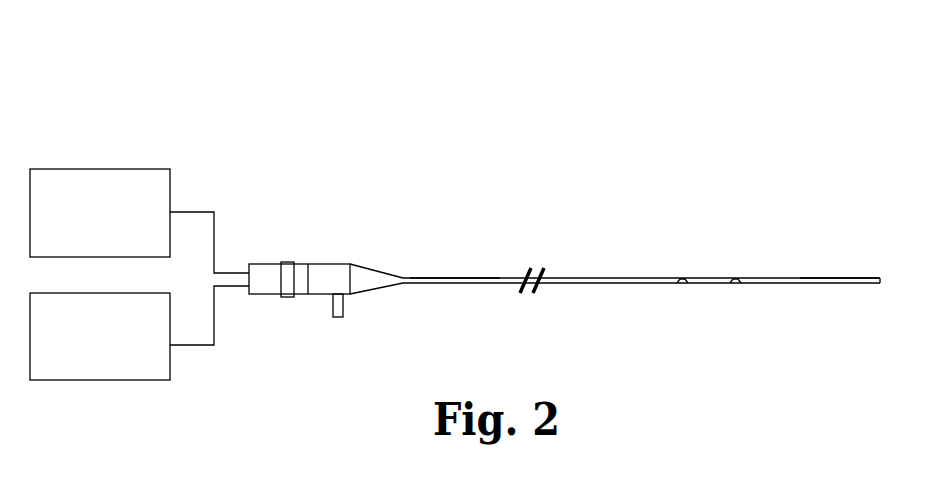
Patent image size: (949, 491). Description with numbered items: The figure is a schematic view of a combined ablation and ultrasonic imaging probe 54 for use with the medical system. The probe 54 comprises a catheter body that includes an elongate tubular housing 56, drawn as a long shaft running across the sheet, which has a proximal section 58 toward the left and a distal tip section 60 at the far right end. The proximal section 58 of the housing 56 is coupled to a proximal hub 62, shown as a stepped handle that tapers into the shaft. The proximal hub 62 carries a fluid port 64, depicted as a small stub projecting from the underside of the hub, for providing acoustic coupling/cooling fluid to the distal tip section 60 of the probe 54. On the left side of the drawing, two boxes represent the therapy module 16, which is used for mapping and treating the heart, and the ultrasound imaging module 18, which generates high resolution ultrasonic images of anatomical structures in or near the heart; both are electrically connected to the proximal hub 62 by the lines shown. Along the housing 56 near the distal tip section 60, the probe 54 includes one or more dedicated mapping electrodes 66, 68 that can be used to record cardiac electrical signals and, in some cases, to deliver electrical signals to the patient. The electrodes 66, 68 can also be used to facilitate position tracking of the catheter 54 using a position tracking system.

The therapy module 16 is at (112, 169).
The ultrasound imaging module 18 is at (57, 381).
The combined ablation and ultrasonic imaging probe 54 is at (652, 57).
The elongate tubular housing 56 is at (615, 278).
The proximal section 58 is at (458, 253).
The distal tip section 60 is at (862, 254).
The proximal hub 62 is at (322, 243).
The fluid port 64 is at (333, 306).
The mapping electrode 66 is at (682, 284).
The mapping electrode 68 is at (735, 284).